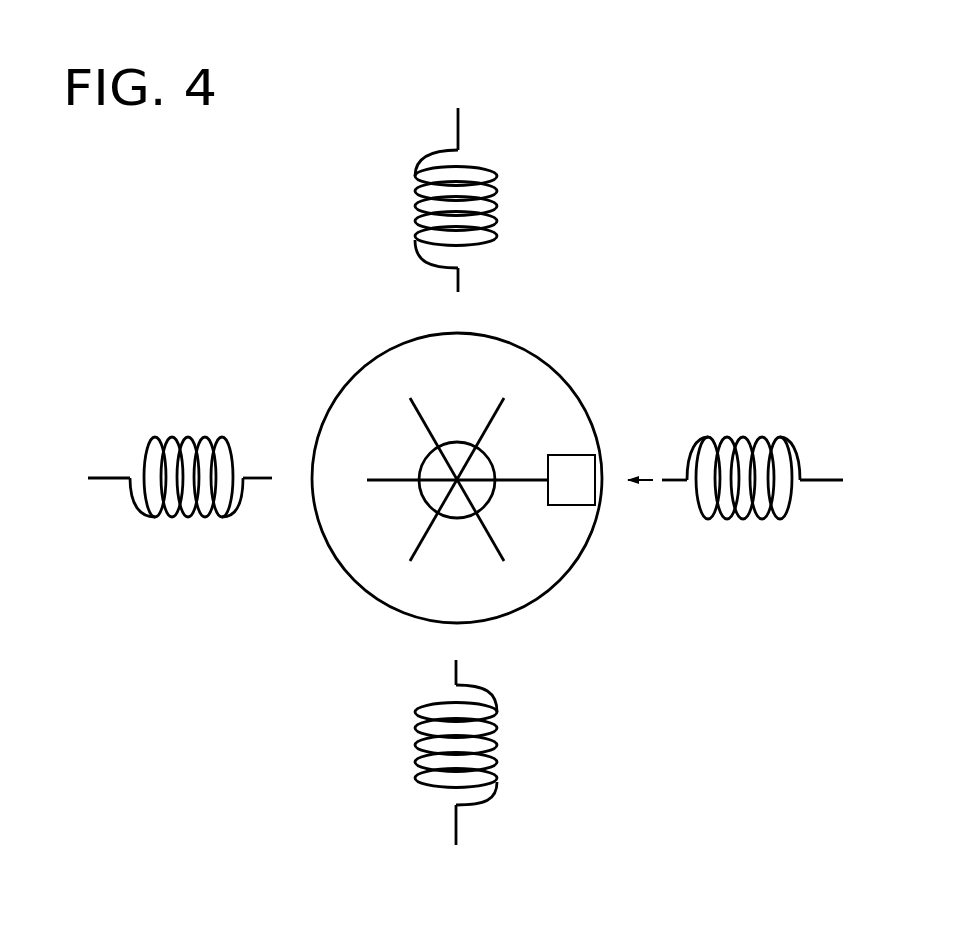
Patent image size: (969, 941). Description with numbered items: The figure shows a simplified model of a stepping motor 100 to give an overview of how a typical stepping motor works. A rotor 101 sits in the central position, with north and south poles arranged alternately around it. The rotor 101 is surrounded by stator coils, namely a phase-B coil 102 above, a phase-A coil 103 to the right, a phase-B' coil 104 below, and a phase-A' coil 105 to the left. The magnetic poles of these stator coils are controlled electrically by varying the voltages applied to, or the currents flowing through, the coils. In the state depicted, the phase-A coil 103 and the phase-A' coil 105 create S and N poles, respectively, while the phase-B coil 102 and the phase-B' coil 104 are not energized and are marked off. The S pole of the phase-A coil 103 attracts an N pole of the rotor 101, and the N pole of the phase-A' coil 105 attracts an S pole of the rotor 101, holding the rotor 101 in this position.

The stepping motor 100 is at (523, 72).
The rotor 101 is at (560, 582).
The phase-B coil 102 is at (537, 185).
The phase-A coil 103 is at (710, 536).
The phase-B' coil 104 is at (486, 826).
The phase-A' coil 105 is at (209, 560).